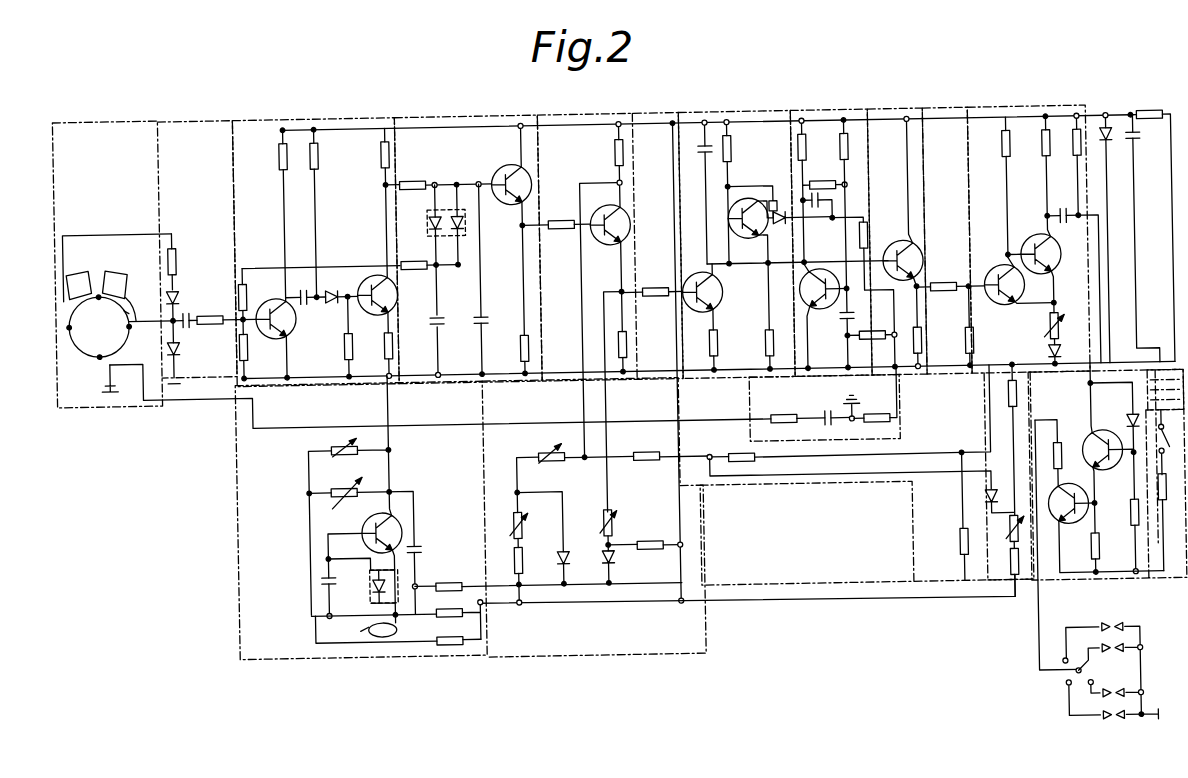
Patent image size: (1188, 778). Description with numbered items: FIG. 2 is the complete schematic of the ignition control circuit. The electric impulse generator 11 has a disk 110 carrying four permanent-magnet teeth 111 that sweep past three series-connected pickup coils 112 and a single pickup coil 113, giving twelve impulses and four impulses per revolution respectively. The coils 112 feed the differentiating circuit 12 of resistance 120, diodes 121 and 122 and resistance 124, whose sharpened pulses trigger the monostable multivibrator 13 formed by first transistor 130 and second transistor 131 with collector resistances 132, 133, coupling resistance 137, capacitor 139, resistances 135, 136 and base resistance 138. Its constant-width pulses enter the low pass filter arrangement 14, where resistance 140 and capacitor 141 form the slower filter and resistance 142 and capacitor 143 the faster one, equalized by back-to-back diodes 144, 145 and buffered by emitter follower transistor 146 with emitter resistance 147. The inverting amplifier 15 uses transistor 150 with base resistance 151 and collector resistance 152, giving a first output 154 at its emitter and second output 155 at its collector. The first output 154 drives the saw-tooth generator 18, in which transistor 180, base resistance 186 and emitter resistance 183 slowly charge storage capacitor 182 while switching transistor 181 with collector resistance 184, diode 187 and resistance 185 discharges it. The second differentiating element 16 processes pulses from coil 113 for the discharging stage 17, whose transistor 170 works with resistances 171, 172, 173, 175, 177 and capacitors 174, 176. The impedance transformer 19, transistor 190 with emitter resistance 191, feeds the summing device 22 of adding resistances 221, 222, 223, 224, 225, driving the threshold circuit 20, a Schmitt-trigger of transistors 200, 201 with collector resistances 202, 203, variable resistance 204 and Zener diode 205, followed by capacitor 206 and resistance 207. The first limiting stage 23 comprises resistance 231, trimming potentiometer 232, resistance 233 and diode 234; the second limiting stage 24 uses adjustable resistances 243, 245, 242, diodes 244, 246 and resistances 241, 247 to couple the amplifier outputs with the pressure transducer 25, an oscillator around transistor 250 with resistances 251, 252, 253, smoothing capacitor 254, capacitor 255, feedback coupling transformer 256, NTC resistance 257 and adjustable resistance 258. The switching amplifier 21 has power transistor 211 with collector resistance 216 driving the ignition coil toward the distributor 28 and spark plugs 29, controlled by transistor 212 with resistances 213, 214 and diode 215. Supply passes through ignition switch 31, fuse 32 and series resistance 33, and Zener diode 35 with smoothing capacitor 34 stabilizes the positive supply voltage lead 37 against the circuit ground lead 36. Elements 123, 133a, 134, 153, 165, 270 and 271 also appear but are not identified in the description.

The electric impulse generator 11 is at (92, 113).
The differentiating circuit 12 is at (181, 114).
The monostable multivibrator 13 is at (297, 114).
The low pass filter arrangement 14 is at (468, 240).
The inverting amplifier 15 is at (610, 239).
The second differentiating element 16 is at (748, 408).
The discharging stage 17 is at (831, 234).
The saw-tooth generator 18 is at (736, 235).
The impedance transformer 19 is at (897, 234).
The threshold circuit 20 is at (1028, 233).
The switching amplifier 21 is at (1096, 590).
The summing device 22 is at (904, 598).
The first limiting stage 23 is at (1016, 600).
The second limiting stage 24 is at (575, 657).
The pressure transducer 25 is at (370, 653).
The distributor 28 is at (1064, 671).
The spark plugs 29 is at (1118, 666).
The ignition switch 31 is at (1169, 441).
The fuse 32 is at (1172, 521).
The series resistance 33 is at (1151, 228).
The smoothing capacitor 34 is at (1145, 134).
The Zener diode 35 is at (1138, 250).
The circuit ground lead 36 is at (647, 383).
The positive supply voltage lead 37 is at (771, 617).
The disk 110 is at (93, 334).
The teeth 111 is at (130, 337).
The first pickup coils 112 is at (84, 253).
The second pickup coil 113 is at (119, 378).
The resistance 120 is at (187, 261).
The diode 121 is at (185, 309).
The diode 122 is at (184, 363).
The capacitor 123 is at (196, 308).
The resistance 124 is at (225, 329).
The first transistor 130 is at (297, 326).
The second transistor 131 is at (375, 304).
The collector resistance 132 is at (269, 215).
The collector resistance 133 is at (369, 203).
The diode 133a is at (345, 287).
The resistor 134 is at (373, 345).
The resistance 135 is at (333, 338).
The resistance 136 is at (330, 213).
The resistance 137 is at (258, 294).
The resistance 138 is at (263, 350).
The capacitor 139 is at (309, 308).
The resistance 140 is at (438, 172).
The capacitor 141 is at (469, 280).
The resistance 142 is at (431, 279).
The capacitor 143 is at (426, 348).
The diode 144 is at (434, 249).
The diode 145 is at (511, 229).
The transistor 146 is at (472, 224).
The emitter resistance 147 is at (518, 345).
The transistor 150 is at (607, 238).
The base resistance 151 is at (556, 214).
The collector resistance 152 is at (613, 153).
The resistor 153 is at (633, 343).
The first output 154 is at (607, 392).
The second output 155 is at (631, 185).
The resistor 165 is at (652, 278).
The transistor 170 is at (823, 319).
The resistance 171 is at (815, 195).
The resistance 172 is at (858, 214).
The resistance 173 is at (824, 175).
The capacitor 174 is at (821, 217).
The resistance 175 is at (864, 287).
The capacitor 176 is at (872, 346).
The resistance 177 is at (866, 341).
The transistor 180 is at (727, 295).
The switching transistor 181 is at (750, 232).
The storage capacitor 182 is at (697, 192).
The emitter resistance 183 is at (727, 350).
The collector resistance 184 is at (746, 191).
The resistance 185 is at (758, 317).
The base resistance 186 is at (753, 187).
The diode 187 is at (803, 207).
The transistor 190 is at (902, 222).
The emitter resistance 191 is at (931, 345).
The transistor 200 is at (1019, 293).
The transistor 201 is at (1054, 269).
The collector resistance 202 is at (1022, 186).
The collector resistance 203 is at (1033, 175).
The variable resistance 204 is at (1066, 323).
The Zener diode 205 is at (1048, 357).
The capacitor 206 is at (1074, 286).
The resistance 207 is at (1066, 165).
The power transistor 211 is at (1106, 520).
The transistor 212 is at (1108, 447).
The resistance 213 is at (1110, 553).
The resistance 214 is at (1121, 536).
The diode 215 is at (1115, 441).
The collector resistance 216 is at (1060, 449).
The adding resistance 221 is at (950, 275).
The adding resistance 222 is at (950, 327).
The adding resistance 223 is at (955, 548).
The adding resistance 224 is at (849, 429).
The adding resistance 225 is at (648, 445).
The resistance 231 is at (986, 439).
The trimming potentiometer 232 is at (1006, 532).
The resistance 233 is at (1003, 572).
The diode 234 is at (1001, 485).
The resistance 241 is at (543, 539).
The adjustable resistance 242 is at (507, 520).
The adjustable resistance 243 is at (551, 463).
The diode 244 is at (537, 567).
The adjustable resistance 245 is at (596, 530).
The diode 246 is at (626, 567).
The resistance 247 is at (645, 535).
The transistor 250 is at (363, 541).
The resistance 251 is at (397, 621).
The resistance 252 is at (398, 645).
The resistance 253 is at (547, 575).
The smoothing capacitor 254 is at (418, 549).
The capacitor 255 is at (318, 573).
The feedback coupling transformer 256 is at (367, 592).
The NTC resistance 257 is at (360, 504).
The adjustable resistance 258 is at (334, 441).
The sensing element 270 is at (368, 629).
The lead 271 is at (346, 625).